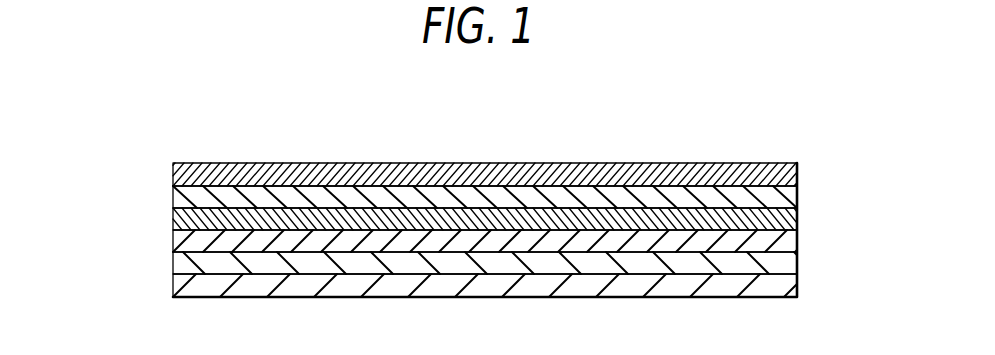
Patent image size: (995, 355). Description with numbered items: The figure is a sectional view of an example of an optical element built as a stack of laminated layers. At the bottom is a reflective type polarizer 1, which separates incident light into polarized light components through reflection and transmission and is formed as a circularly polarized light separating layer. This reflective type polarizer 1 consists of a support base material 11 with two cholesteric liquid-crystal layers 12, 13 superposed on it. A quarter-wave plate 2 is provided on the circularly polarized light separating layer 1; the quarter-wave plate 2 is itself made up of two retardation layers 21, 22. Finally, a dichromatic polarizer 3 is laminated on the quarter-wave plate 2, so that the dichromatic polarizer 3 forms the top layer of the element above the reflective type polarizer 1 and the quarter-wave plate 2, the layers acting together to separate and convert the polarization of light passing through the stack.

The reflective type polarizer 1 is at (535, 263).
The support base material 11 is at (799, 285).
The cholesteric liquid-crystal layer 12 is at (799, 260).
The cholesteric liquid-crystal layer 13 is at (799, 238).
The quarter-wave plate 2 is at (535, 206).
The retardation layer 21 is at (799, 217).
The retardation layer 22 is at (799, 193).
The dichromatic polarizer 3 is at (799, 165).